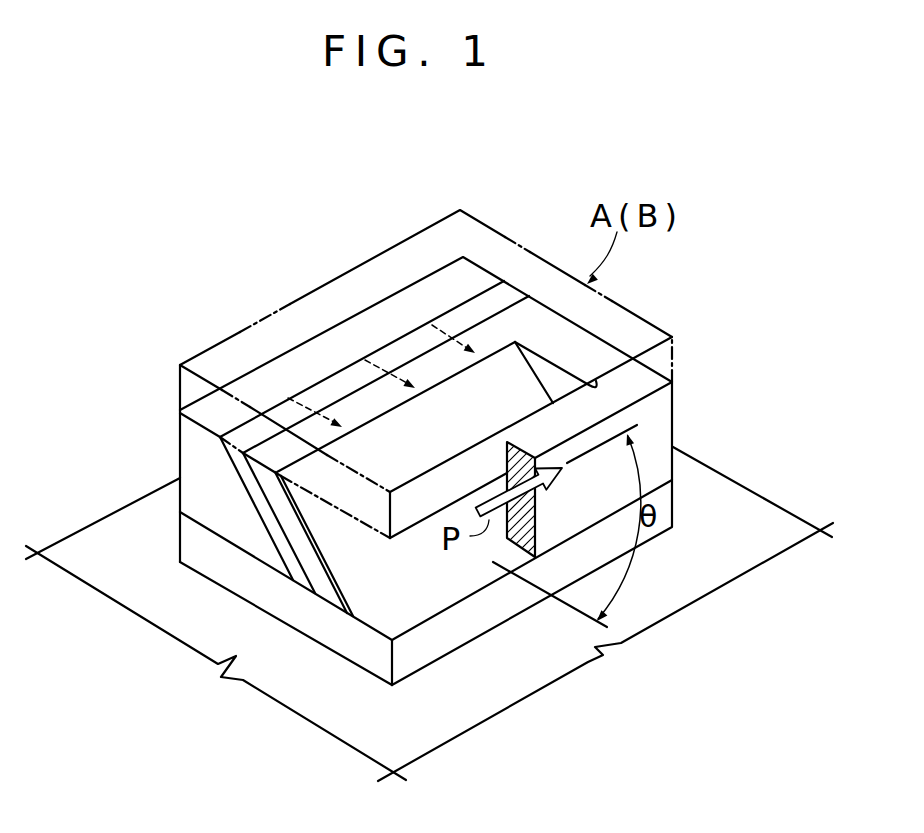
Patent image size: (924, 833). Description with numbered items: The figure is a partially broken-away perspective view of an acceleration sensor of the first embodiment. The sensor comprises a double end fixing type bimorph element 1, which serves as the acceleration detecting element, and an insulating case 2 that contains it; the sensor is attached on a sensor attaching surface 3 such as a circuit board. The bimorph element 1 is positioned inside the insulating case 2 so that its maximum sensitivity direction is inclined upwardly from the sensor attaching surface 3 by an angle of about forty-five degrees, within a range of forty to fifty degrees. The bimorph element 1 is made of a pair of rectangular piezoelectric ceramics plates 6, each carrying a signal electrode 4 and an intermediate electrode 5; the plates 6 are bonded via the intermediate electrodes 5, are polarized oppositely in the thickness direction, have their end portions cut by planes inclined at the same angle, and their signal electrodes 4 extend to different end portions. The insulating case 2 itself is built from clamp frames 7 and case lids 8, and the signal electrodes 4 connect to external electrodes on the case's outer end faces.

The bimorph element 1 is at (316, 191).
The insulating case 2 is at (92, 367).
The sensor attaching surface 3 is at (704, 586).
The signal electrode 4 is at (357, 410).
The intermediate electrode 5 is at (420, 357).
The piezoelectric ceramics plate 6 is at (323, 393).
The clamp frame 7 is at (180, 450).
The case lid 8 is at (180, 393).